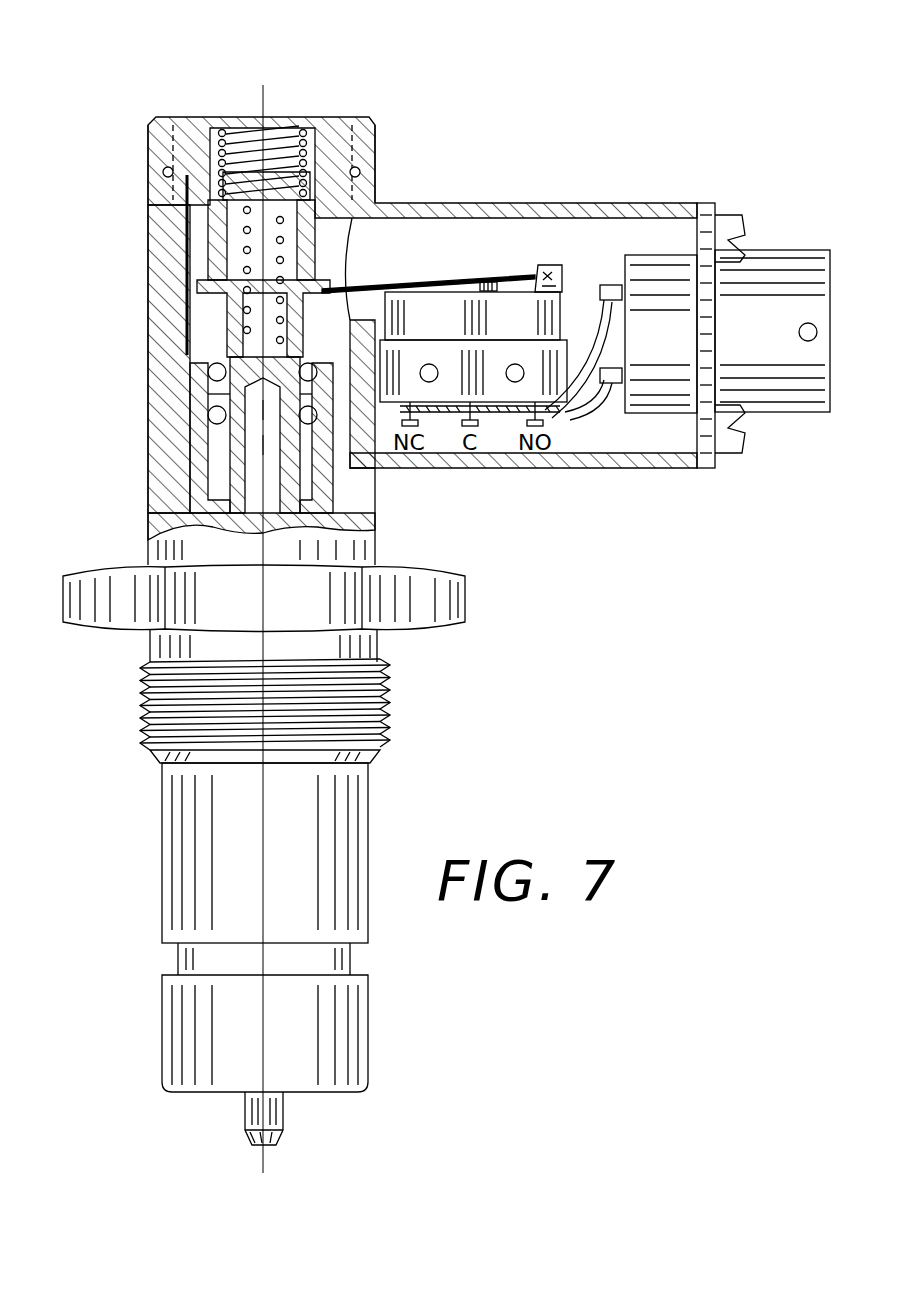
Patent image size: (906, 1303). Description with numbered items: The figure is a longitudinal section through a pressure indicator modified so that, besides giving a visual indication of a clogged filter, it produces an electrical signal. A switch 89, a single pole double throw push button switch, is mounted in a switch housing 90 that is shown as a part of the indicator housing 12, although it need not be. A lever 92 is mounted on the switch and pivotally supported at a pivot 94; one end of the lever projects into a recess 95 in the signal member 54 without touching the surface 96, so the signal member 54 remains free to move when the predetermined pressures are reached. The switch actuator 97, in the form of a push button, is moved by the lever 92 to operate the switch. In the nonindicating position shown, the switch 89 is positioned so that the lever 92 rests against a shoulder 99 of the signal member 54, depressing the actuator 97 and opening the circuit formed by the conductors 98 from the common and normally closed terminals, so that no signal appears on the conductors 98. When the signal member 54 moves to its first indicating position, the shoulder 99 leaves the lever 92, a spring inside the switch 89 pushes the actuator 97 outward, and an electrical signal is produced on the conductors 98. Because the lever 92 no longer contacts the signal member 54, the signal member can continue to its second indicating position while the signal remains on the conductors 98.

The indicator housing 12 is at (372, 512).
The signal member 54 is at (282, 117).
The switch 89 is at (667, 240).
The switch housing 90 is at (458, 278).
The lever 92 is at (520, 277).
The pivot 94 is at (628, 255).
The recess 95 is at (393, 282).
The surface 96 is at (325, 318).
The switch actuator 97 is at (570, 295).
The conductors 98 is at (590, 413).
The shoulder 99 is at (203, 298).